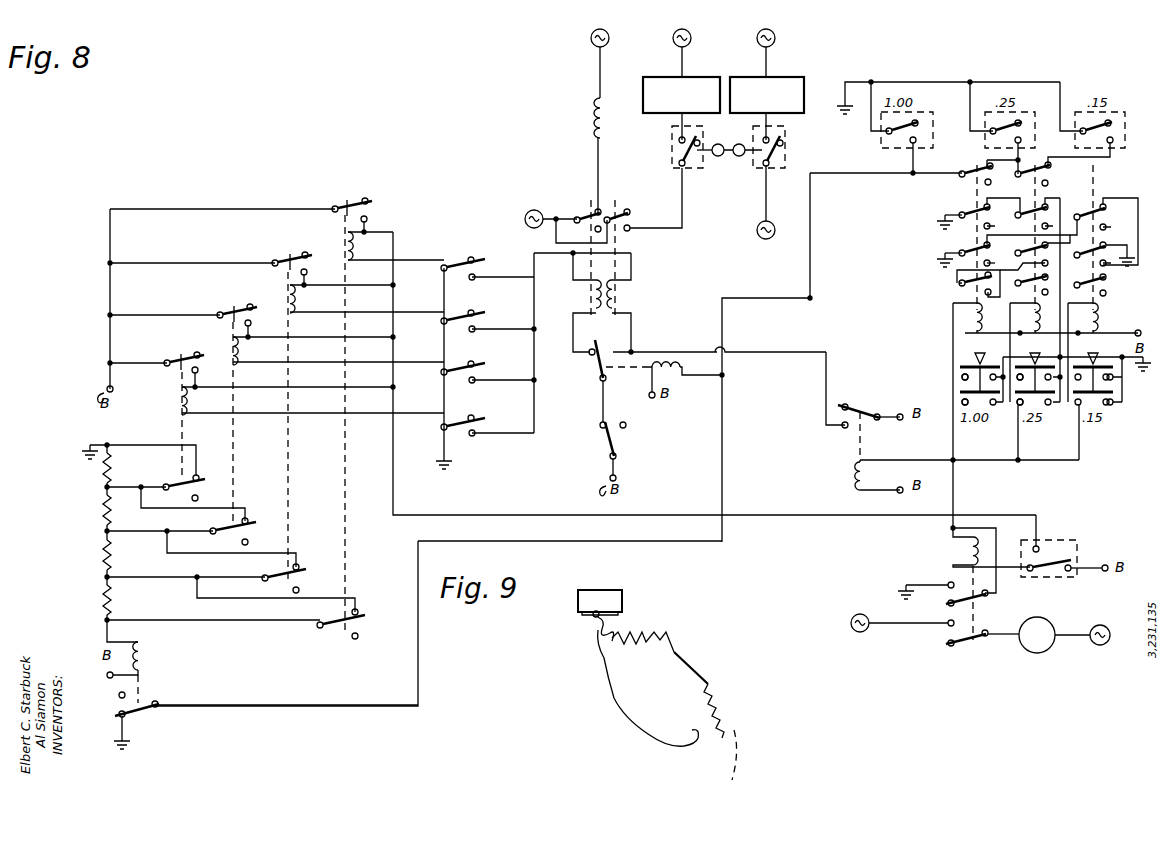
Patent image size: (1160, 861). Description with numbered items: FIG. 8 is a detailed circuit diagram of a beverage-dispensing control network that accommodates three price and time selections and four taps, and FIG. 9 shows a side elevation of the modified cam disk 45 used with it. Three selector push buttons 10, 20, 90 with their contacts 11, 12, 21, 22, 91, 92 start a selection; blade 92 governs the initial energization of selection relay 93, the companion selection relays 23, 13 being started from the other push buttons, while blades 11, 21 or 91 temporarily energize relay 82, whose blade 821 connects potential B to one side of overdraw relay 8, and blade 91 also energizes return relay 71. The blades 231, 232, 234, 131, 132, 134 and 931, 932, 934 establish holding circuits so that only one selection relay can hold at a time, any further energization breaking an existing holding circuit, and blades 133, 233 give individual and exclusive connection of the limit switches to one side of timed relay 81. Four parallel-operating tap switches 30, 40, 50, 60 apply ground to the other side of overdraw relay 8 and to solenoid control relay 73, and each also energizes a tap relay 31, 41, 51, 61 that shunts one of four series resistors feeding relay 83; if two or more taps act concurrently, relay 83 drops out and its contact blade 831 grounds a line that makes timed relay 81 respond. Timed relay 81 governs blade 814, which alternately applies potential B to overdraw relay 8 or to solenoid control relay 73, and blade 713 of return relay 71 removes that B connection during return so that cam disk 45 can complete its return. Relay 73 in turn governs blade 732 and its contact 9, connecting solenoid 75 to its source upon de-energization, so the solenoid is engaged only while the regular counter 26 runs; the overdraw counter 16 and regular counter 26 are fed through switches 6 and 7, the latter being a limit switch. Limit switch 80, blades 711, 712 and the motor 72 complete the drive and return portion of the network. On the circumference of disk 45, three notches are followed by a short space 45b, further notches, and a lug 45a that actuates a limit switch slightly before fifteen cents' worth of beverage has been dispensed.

In FIG. 8, the tap relay 31 is at (348, 247).
In FIG. 8, the tap relay 41 is at (290, 302).
In FIG. 8, the tap relay 51 is at (236, 351).
In FIG. 8, the tap relay 61 is at (176, 403).
In FIG. 8, the tap switch 30 is at (478, 262).
In FIG. 8, the tap switch 40 is at (478, 315).
In FIG. 8, the tap switch 50 is at (478, 366).
In FIG. 8, the tap switch 60 is at (478, 421).
In FIG. 8, the solenoid control relay 73 is at (588, 298).
In FIG. 8, the overdraw relay 8 is at (620, 298).
In FIG. 8, the blade 732 is at (594, 216).
In FIG. 8, the switch contact 9 is at (632, 218).
In FIG. 8, the solenoid 75 is at (592, 110).
In FIG. 8, the overdraw counter 16 is at (700, 80).
In FIG. 8, the regular counter 26 is at (798, 77).
In FIG. 8, the counter switch 6 is at (672, 150).
In FIG. 8, the limit switch 7 is at (782, 150).
In FIG. 9, the limit switch 7 is at (622, 599).
In FIG. 8, the blade 233 is at (968, 168).
In FIG. 8, the blade 133 is at (1050, 175).
In FIG. 8, the blade 234 is at (972, 206).
In FIG. 8, the blade 134 is at (1032, 204).
In FIG. 8, the blade 934 is at (1090, 200).
In FIG. 8, the blade 232 is at (964, 250).
In FIG. 8, the blade 132 is at (1030, 250).
In FIG. 8, the blade 932 is at (1108, 262).
In FIG. 8, the blade 231 is at (959, 284).
In FIG. 8, the blade 131 is at (1052, 282).
In FIG. 8, the blade 931 is at (1104, 295).
In FIG. 8, the relay coil 23 is at (969, 314).
In FIG. 8, the relay coil 13 is at (1030, 314).
In FIG. 8, the selection relay 93 is at (1088, 314).
In FIG. 8, the selector push button 20 is at (978, 356).
In FIG. 8, the selector push button 10 is at (1036, 356).
In FIG. 8, the push button 90 is at (1094, 356).
In FIG. 8, the plunger contact 22 is at (960, 374).
In FIG. 8, the blade 21 is at (962, 396).
In FIG. 8, the plunger contact 12 is at (1022, 380).
In FIG. 8, the blade 11 is at (1022, 404).
In FIG. 8, the blade 92 is at (1112, 380).
In FIG. 8, the blade 91 is at (1112, 405).
In FIG. 8, the blade 821 is at (852, 400).
In FIG. 8, the relay 82 is at (852, 486).
In FIG. 8, the timed relay 81 is at (668, 360).
In FIG. 8, the blade 814 is at (594, 376).
In FIG. 8, the blade 713 is at (616, 440).
In FIG. 8, the return relay 71 is at (970, 544).
In FIG. 8, the limit switch 80 is at (1070, 562).
In FIG. 8, the relay switch 711 is at (974, 600).
In FIG. 8, the relay switch 712 is at (970, 644).
In FIG. 8, the motor 72 is at (1054, 626).
In FIG. 8, the relay 83 is at (147, 660).
In FIG. 8, the contact blade 831 is at (144, 714).
In FIG. 9, the cam disk 45 is at (676, 697).
In FIG. 9, the lug 45a is at (710, 673).
In FIG. 9, the space 45b is at (668, 634).